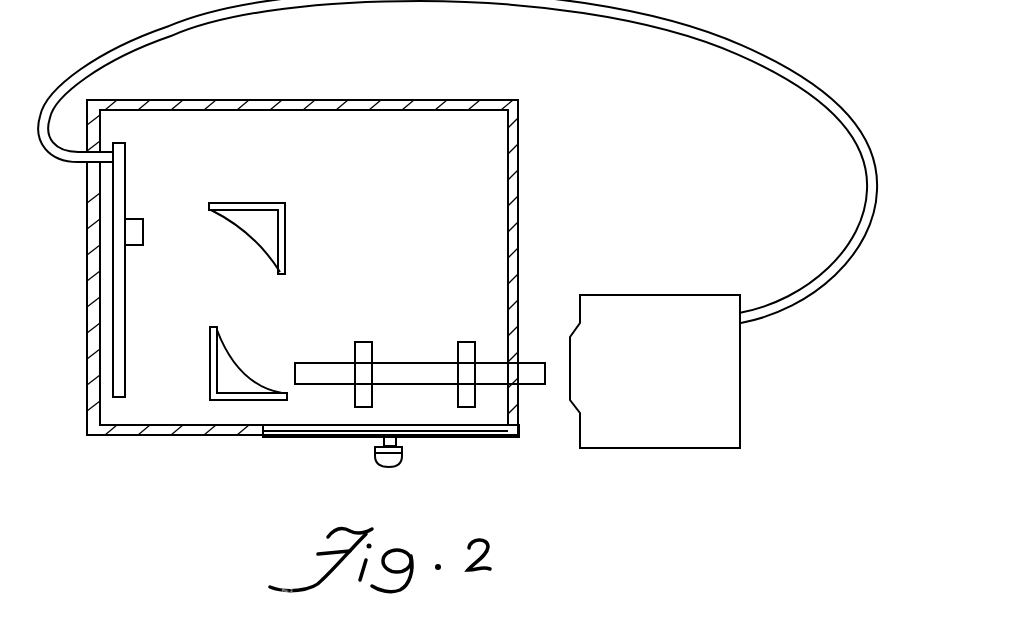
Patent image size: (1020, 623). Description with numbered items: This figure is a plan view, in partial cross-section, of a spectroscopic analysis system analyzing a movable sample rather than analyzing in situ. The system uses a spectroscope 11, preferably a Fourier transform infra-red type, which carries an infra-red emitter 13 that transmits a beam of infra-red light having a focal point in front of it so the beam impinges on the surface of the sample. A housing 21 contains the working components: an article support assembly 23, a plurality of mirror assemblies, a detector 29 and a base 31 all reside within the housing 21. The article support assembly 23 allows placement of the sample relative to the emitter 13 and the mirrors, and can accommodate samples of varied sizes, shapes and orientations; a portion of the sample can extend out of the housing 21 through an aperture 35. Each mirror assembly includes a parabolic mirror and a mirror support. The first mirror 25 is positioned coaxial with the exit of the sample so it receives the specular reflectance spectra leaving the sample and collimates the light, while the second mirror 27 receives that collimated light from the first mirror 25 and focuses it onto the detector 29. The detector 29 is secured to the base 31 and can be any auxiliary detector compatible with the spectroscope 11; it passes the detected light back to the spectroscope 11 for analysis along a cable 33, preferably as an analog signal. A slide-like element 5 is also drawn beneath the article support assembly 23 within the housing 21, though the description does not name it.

The slide bar 5 is at (425, 362).
The spectroscope 11 is at (722, 375).
The infra-red emitter 13 is at (566, 398).
The housing 21 is at (172, 435).
The article support assembly 23 is at (466, 342).
The first mirror 25 is at (228, 400).
The second mirror 27 is at (243, 203).
The detector 29 is at (143, 220).
The base 31 is at (117, 351).
The cable 33 is at (720, 37).
The aperture 35 is at (518, 330).